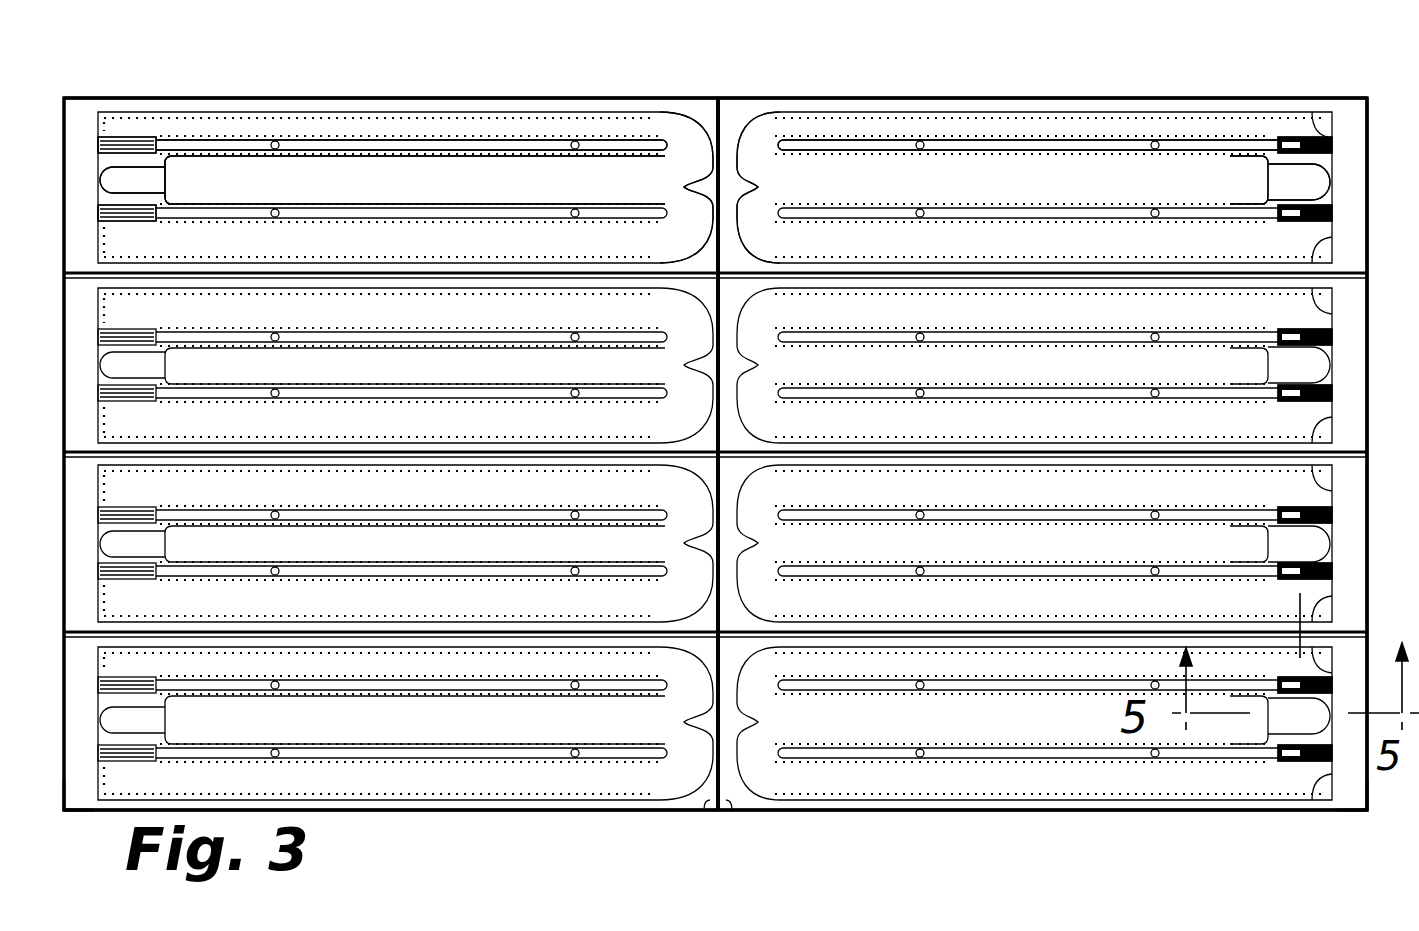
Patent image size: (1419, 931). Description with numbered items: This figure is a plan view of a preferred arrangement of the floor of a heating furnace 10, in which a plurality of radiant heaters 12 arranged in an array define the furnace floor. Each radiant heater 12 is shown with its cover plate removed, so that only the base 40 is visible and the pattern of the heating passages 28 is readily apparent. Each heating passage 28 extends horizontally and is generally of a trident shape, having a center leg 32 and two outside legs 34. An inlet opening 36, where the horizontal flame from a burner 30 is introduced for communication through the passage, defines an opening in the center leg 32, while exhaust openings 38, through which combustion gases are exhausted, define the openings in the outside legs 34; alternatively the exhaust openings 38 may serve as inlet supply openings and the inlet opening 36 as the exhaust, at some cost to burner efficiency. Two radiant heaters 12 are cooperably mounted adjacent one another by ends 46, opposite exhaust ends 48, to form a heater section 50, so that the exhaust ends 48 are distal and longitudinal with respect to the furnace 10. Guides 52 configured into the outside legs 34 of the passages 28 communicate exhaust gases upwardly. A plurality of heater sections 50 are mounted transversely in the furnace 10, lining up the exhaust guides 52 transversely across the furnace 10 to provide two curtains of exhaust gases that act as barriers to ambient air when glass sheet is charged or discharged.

The furnace 10 is at (1062, 82).
The radiant heater 12 is at (481, 98).
The heating passage 28 is at (682, 163).
The burner 30 is at (1286, 176).
The center leg 32 is at (880, 185).
The outside legs 34 is at (848, 120).
The inlet opening 36 is at (167, 183).
The exhaust openings 38 is at (113, 237).
The base 40 is at (1055, 805).
The ends 46 is at (733, 802).
The exhaust ends 48 is at (1392, 825).
The heater section 50 is at (1378, 646).
The guides 52 is at (1332, 514).